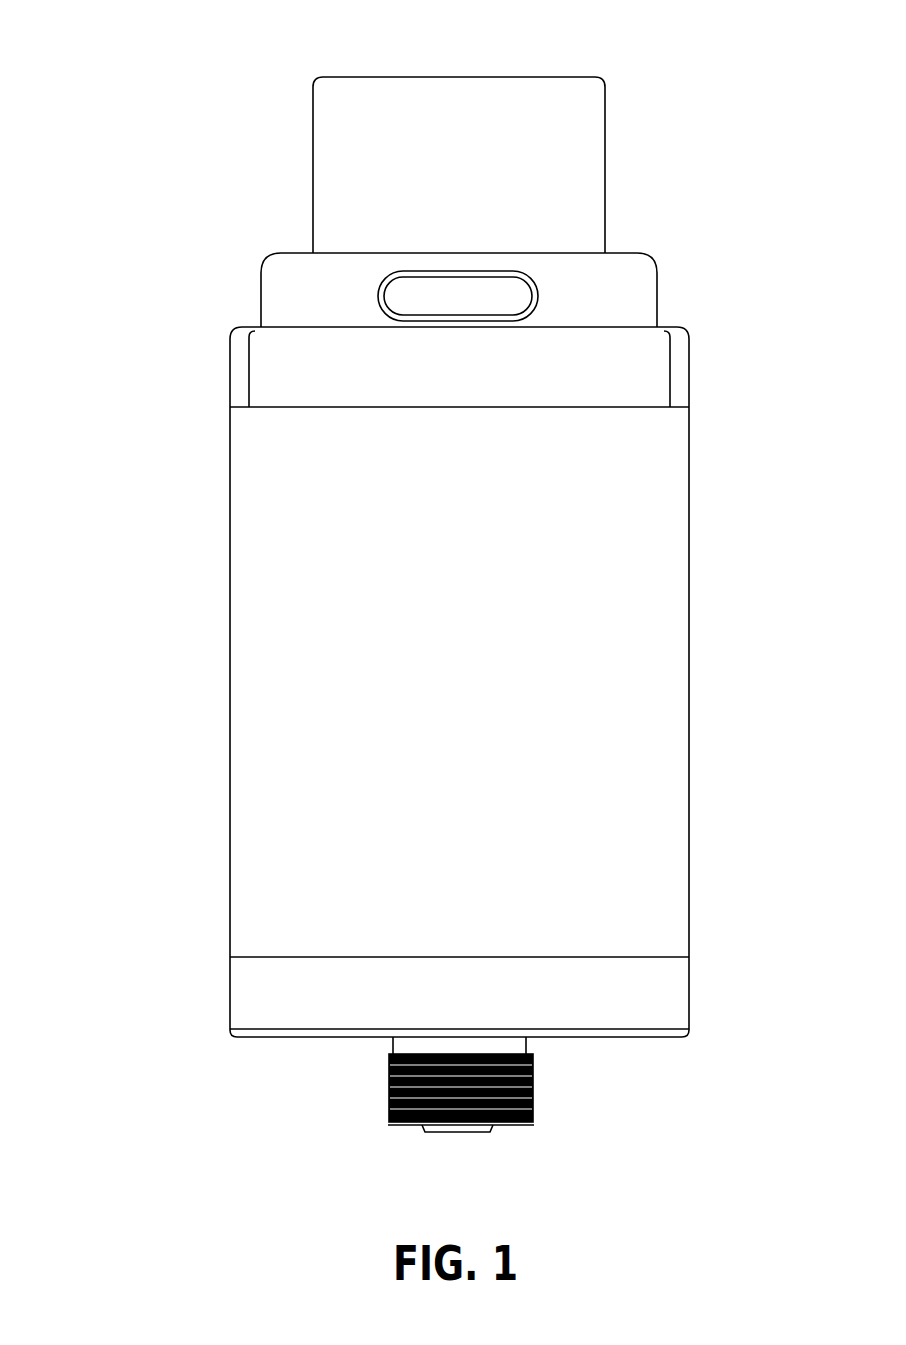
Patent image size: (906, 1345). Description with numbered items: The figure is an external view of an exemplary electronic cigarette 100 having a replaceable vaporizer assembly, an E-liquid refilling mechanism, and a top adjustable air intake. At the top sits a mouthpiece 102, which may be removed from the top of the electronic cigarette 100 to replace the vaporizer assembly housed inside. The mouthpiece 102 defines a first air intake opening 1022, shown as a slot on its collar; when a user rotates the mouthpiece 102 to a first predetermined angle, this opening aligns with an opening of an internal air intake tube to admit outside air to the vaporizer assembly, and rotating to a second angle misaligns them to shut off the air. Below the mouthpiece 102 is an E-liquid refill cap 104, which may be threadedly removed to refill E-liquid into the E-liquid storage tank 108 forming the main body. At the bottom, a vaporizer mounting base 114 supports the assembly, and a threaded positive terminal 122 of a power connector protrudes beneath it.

The electronic cigarette 100 is at (76, 78).
The mouthpiece 102 is at (607, 160).
The first air intake opening 1022 is at (502, 293).
The E-liquid refill cap 104 is at (690, 366).
The E-liquid storage tank 108 is at (690, 640).
The vaporizer mounting base 114 is at (690, 993).
The positive terminal of a power connector 122 is at (490, 1132).